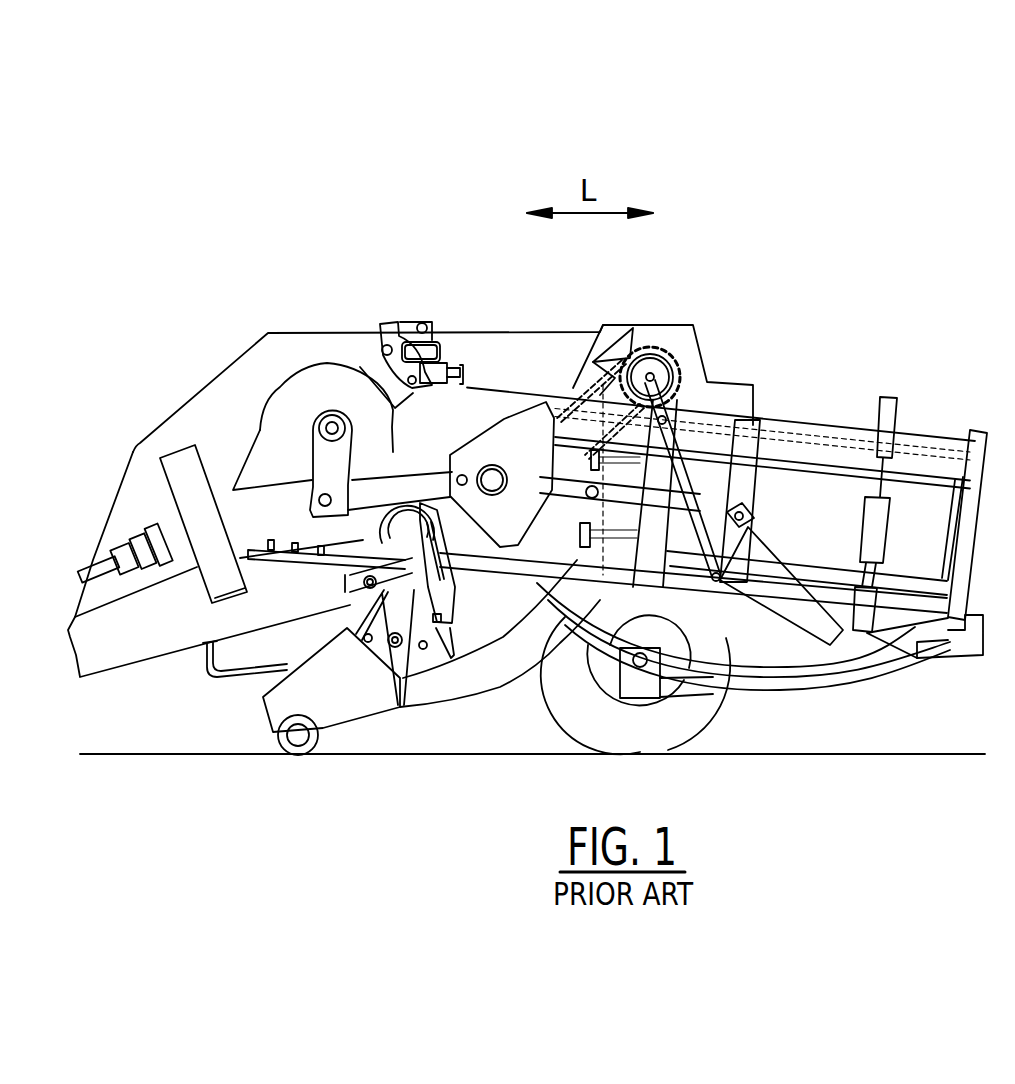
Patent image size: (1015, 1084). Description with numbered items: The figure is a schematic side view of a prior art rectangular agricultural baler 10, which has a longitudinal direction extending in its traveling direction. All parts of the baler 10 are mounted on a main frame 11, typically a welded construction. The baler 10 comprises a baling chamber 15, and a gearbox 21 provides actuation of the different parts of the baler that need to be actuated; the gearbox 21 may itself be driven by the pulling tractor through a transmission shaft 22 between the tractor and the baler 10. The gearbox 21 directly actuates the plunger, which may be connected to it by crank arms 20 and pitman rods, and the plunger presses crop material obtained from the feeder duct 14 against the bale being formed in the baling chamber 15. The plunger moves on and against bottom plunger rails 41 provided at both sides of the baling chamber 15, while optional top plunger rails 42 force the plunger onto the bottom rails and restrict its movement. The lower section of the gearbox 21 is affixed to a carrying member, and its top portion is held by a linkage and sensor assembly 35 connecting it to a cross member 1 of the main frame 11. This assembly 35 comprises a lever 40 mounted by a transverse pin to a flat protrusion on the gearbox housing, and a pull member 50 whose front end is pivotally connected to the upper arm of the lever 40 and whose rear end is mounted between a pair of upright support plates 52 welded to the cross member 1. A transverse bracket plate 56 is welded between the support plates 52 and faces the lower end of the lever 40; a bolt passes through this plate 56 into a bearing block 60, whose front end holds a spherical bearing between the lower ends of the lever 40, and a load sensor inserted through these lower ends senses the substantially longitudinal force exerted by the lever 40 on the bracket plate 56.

The cross member 1 is at (437, 342).
The agricultural baler 10 is at (893, 317).
The main frame 11 is at (900, 647).
The feeder duct 14 is at (472, 697).
The baling chamber 15 is at (717, 433).
The crank arms 20 is at (320, 462).
The gearbox 21 is at (282, 405).
The transmission shaft 22 is at (80, 578).
The linkage and sensor assembly 35 is at (388, 285).
The lever 40 is at (370, 338).
The bottom plunger rails 41 is at (557, 500).
The top plunger rails 42 is at (387, 327).
The pull member 50 is at (410, 327).
The upright support plates 52 is at (450, 343).
The transverse bracket plate 56 is at (448, 362).
The bearing block 60 is at (393, 413).